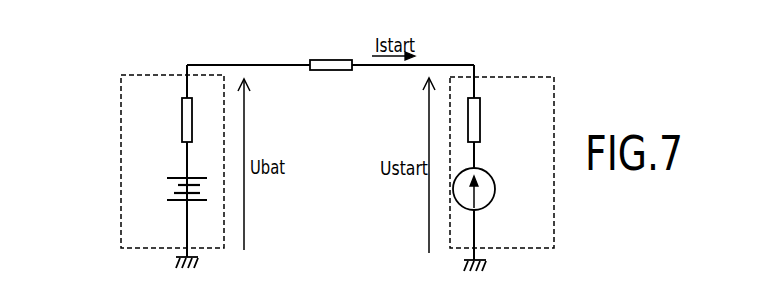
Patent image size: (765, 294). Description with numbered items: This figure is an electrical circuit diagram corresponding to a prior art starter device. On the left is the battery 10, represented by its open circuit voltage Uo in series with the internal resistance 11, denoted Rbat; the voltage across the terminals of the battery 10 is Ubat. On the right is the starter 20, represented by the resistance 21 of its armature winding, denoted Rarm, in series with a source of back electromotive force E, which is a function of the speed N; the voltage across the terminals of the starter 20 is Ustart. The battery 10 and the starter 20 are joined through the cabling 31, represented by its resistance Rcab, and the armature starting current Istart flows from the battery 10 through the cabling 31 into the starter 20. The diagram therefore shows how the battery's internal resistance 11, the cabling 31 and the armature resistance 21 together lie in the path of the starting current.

The battery 10 is at (120, 178).
The internal resistance 11 is at (182, 121).
The starter 20 is at (555, 213).
The resistance of the armature winding 21 is at (482, 118).
The cabling 31 is at (335, 60).